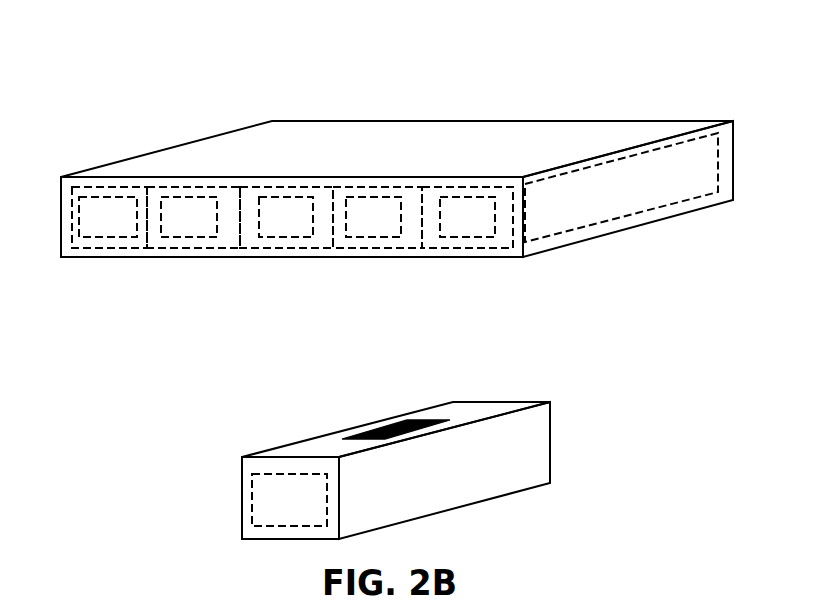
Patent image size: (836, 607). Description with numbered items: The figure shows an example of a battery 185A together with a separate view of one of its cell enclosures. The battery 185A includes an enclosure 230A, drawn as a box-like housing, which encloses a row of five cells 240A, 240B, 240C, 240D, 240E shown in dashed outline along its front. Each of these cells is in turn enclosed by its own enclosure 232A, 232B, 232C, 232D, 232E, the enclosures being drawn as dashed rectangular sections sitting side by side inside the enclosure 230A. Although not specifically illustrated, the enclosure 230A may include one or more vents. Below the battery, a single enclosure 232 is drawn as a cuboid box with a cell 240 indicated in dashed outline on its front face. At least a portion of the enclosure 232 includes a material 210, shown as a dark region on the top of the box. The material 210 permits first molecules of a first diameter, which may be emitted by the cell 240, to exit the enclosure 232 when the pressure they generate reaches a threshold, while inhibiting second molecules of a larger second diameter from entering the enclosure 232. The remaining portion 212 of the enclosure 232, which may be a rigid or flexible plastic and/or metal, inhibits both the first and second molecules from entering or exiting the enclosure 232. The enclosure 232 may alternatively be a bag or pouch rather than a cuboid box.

The battery 185A is at (386, 185).
The enclosure 230A is at (297, 122).
The enclosure 232A is at (93, 262).
The enclosure 232B is at (186, 262).
The enclosure 232C is at (275, 262).
The enclosure 232D is at (367, 262).
The enclosure 232E is at (461, 262).
The cell 240A is at (108, 237).
The cell 240B is at (188, 237).
The cell 240C is at (286, 237).
The cell 240D is at (373, 237).
The cell 240E is at (468, 237).
The enclosure 232 is at (369, 448).
The cell 240 is at (290, 475).
The material 210 is at (394, 417).
The portion 212 is at (473, 412).